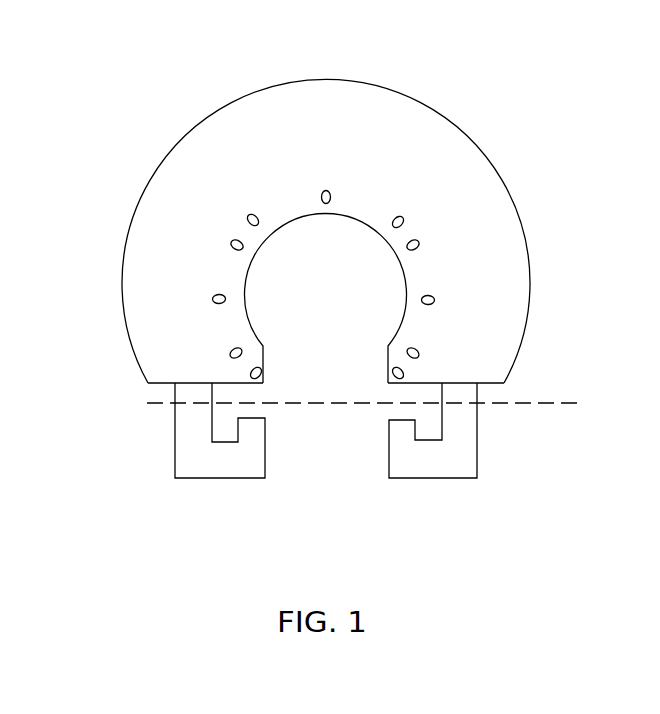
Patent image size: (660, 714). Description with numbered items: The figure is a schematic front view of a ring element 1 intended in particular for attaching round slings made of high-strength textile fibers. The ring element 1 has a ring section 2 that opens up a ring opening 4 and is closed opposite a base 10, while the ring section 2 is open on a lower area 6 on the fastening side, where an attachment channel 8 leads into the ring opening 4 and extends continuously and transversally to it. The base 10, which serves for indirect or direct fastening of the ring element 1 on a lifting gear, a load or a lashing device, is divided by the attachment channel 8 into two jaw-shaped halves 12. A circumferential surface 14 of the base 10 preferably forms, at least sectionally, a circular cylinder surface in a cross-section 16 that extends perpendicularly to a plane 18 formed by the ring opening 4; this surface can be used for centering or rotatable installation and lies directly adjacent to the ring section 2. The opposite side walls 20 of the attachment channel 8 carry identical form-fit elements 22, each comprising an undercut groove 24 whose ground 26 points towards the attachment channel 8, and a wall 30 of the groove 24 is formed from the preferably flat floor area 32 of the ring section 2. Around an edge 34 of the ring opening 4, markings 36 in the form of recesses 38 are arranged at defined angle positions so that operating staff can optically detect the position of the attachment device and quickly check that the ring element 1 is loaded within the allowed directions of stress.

The ring element 1 is at (472, 92).
The ring section 2 is at (511, 197).
The ring opening 4 is at (349, 283).
The lower area 6 is at (292, 344).
The attachment channel 8 is at (278, 476).
The base 10 is at (142, 460).
The halves 12 is at (172, 477).
The circumferential surface 14 is at (158, 454).
The cross-section 16 is at (542, 405).
The plane 18 is at (343, 337).
The side walls 20 is at (341, 410).
The form-fit element 22 is at (224, 433).
The undercut groove 24 is at (236, 406).
The ground 26 is at (230, 422).
The wall 30 is at (422, 403).
The floor area 32 is at (483, 403).
The edge 34 is at (302, 217).
The markings 36 is at (323, 211).
The recesses 38 is at (398, 212).